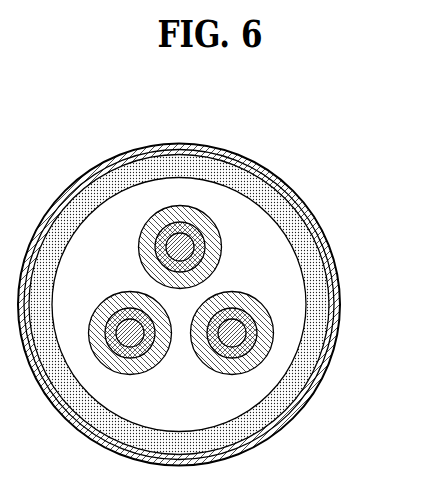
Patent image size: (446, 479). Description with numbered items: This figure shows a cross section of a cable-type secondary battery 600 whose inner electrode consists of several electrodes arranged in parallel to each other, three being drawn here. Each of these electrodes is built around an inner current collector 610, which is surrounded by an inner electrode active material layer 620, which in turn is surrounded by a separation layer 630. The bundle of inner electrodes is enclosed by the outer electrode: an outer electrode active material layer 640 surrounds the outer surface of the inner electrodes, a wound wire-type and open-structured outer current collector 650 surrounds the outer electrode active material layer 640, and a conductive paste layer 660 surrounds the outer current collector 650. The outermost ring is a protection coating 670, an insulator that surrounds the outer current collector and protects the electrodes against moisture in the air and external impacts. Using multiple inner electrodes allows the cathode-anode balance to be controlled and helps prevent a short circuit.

The cable-type secondary battery 600 is at (323, 148).
The inner current collector 610 is at (176, 240).
The inner electrode active material layer 620 is at (177, 227).
The separation layer 630 is at (193, 213).
The outer electrode active material layer 640 is at (290, 257).
The wound wire-type and open-structured outer current collector 650 is at (313, 275).
The conductive paste layer 660 is at (330, 294).
The protection coating 670 is at (334, 332).